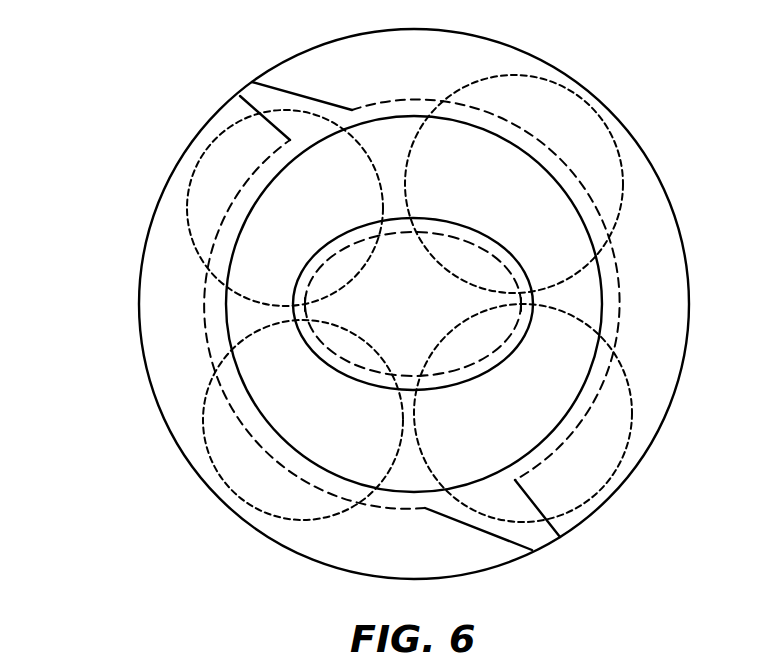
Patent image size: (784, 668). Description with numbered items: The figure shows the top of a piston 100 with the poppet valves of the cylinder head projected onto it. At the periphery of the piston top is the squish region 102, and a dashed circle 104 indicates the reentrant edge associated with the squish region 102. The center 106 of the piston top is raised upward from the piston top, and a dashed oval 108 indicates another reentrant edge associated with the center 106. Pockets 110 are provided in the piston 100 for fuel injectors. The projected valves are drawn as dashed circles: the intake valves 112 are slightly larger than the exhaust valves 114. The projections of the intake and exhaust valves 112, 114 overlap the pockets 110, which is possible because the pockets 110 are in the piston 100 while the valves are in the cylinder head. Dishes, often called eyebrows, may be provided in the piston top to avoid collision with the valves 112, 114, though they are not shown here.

The piston 100 is at (633, 113).
The squish region 102 is at (172, 323).
The dashed circle 104 is at (213, 352).
The center 106 is at (413, 333).
The dashed oval 108 is at (342, 360).
The pockets 110 is at (258, 98).
The intake valves 112 is at (622, 170).
The exhaust valves 114 is at (185, 212).